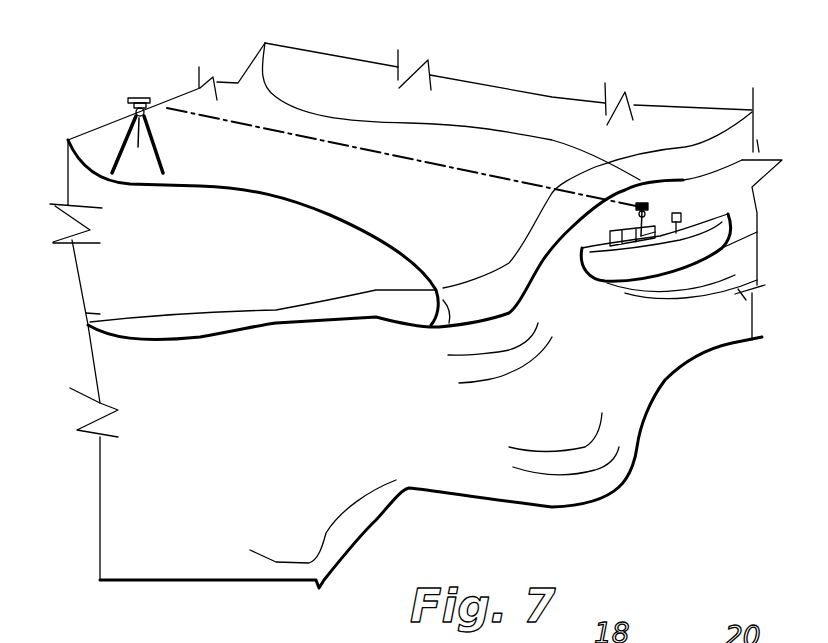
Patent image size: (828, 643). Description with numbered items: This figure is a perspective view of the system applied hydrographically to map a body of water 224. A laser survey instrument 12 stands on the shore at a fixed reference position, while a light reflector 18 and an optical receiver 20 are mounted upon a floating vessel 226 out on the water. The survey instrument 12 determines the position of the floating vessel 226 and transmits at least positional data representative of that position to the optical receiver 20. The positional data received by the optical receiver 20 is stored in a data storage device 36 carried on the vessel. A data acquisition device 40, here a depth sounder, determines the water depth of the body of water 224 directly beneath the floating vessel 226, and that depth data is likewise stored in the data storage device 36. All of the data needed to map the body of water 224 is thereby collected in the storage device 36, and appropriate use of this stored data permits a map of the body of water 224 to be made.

The laser survey instrument 12 is at (136, 92).
The light reflector 18 is at (630, 190).
The optical receiver 20 is at (662, 213).
The data storage device 36 is at (682, 213).
The data acquisition device 40 is at (725, 285).
The body of water 224 is at (265, 433).
The floating vessel 226 is at (602, 273).